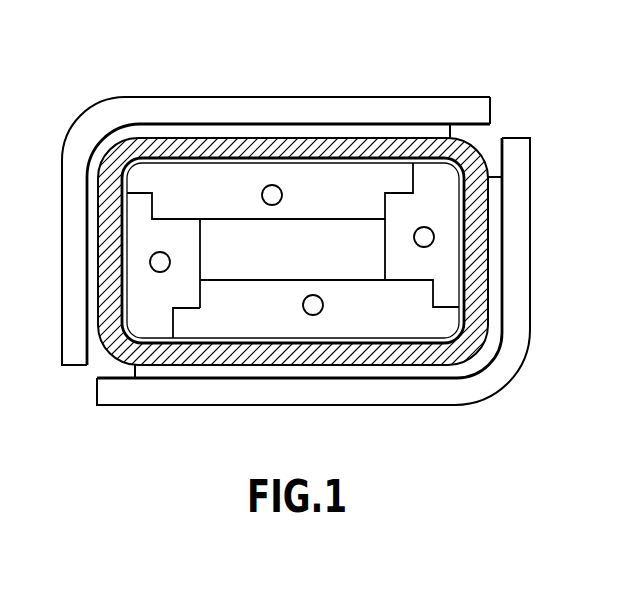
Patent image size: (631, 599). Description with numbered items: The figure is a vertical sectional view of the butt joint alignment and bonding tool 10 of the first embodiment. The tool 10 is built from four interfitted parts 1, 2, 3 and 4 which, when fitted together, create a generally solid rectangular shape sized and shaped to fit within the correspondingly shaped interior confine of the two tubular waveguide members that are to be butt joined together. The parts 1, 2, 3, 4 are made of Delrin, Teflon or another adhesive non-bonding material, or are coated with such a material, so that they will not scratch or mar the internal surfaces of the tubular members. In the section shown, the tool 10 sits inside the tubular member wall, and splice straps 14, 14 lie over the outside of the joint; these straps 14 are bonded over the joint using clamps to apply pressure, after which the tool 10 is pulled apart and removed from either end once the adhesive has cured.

The interfitted part 1 is at (214, 199).
The interfitted part 2 is at (441, 207).
The interfitted part 3 is at (266, 322).
The interfitted part 4 is at (158, 311).
The butt joint alignment and bonding tool 10 is at (430, 268).
The splice strap 14 is at (352, 108).